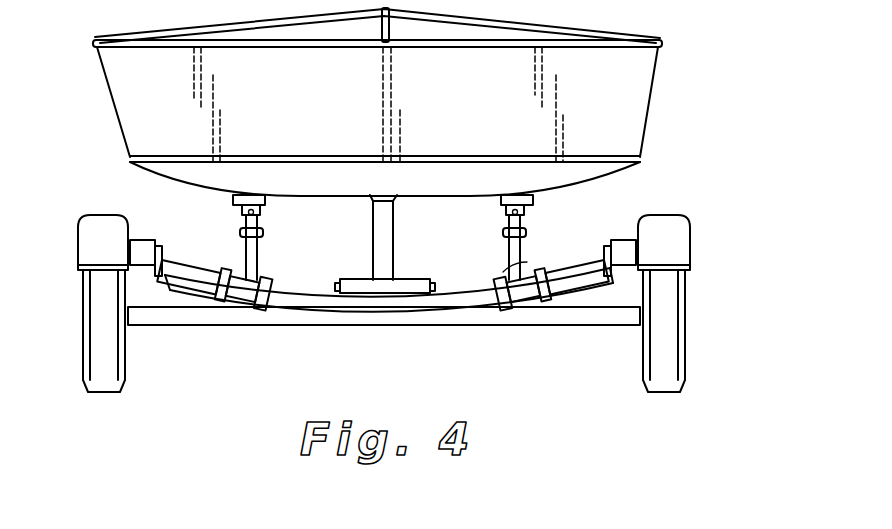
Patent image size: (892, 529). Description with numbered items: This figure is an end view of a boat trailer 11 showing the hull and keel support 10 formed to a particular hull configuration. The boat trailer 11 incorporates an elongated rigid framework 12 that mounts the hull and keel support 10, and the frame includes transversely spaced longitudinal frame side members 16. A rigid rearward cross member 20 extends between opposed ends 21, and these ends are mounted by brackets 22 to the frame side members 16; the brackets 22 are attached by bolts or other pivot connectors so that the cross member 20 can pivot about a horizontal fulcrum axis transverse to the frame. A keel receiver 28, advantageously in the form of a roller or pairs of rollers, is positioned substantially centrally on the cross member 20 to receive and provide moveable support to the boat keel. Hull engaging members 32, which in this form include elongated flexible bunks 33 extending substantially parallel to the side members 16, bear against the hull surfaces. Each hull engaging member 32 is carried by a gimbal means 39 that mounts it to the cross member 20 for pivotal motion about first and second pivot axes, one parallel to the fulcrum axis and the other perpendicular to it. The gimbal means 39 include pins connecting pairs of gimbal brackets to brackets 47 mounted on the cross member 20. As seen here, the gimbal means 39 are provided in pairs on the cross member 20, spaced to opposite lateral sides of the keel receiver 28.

The hull and keel support 10 is at (706, 185).
The boat trailer 11 is at (287, 387).
The elongated rigid framework 12 is at (617, 317).
The longitudinal frame side members 16 is at (642, 262).
The rearward cross member 20 is at (393, 308).
The opposed ends 21 is at (183, 278).
The brackets 22 is at (162, 252).
The keel receiver 28 is at (397, 285).
The hull engaging members 32 is at (278, 191).
The elongated flexible bunks 33 is at (243, 196).
The gimbal means 39 is at (267, 219).
The brackets 47 is at (527, 263).